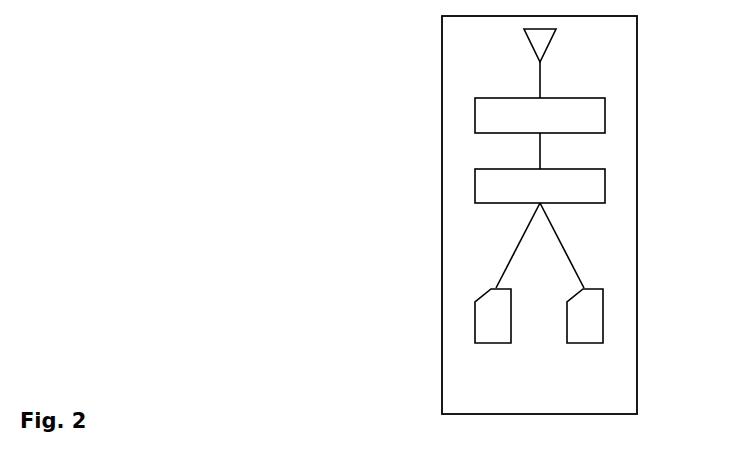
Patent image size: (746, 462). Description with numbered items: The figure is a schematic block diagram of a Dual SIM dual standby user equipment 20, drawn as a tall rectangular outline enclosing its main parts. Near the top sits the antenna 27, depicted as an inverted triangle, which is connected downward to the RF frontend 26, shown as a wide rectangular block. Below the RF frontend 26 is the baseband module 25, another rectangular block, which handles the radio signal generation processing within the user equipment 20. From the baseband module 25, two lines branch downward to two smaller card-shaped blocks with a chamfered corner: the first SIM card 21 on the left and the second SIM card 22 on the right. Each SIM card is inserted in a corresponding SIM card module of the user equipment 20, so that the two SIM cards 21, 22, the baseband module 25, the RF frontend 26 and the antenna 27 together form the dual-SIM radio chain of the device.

The user equipment 20 is at (637, 43).
The first SIM card 21 is at (475, 320).
The second SIM card 22 is at (603, 323).
The baseband module 25 is at (605, 190).
The RF frontend 26 is at (605, 115).
The antenna 27 is at (550, 48).